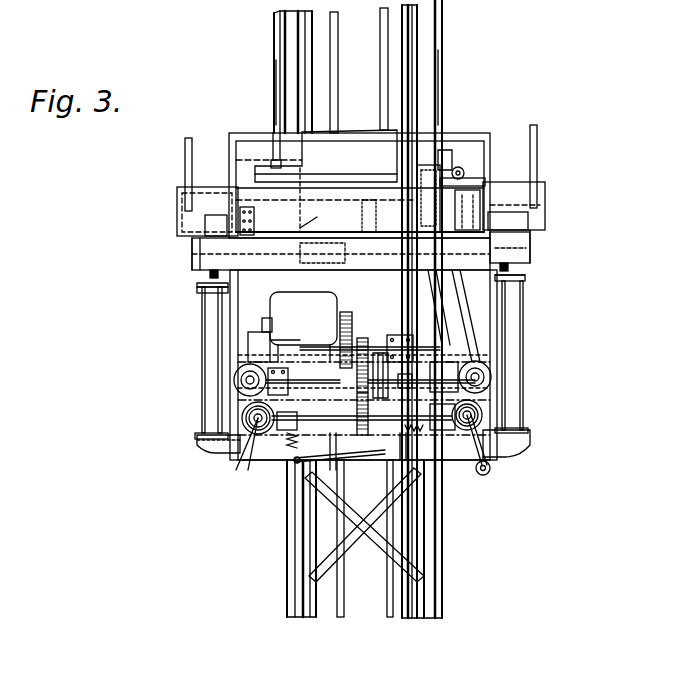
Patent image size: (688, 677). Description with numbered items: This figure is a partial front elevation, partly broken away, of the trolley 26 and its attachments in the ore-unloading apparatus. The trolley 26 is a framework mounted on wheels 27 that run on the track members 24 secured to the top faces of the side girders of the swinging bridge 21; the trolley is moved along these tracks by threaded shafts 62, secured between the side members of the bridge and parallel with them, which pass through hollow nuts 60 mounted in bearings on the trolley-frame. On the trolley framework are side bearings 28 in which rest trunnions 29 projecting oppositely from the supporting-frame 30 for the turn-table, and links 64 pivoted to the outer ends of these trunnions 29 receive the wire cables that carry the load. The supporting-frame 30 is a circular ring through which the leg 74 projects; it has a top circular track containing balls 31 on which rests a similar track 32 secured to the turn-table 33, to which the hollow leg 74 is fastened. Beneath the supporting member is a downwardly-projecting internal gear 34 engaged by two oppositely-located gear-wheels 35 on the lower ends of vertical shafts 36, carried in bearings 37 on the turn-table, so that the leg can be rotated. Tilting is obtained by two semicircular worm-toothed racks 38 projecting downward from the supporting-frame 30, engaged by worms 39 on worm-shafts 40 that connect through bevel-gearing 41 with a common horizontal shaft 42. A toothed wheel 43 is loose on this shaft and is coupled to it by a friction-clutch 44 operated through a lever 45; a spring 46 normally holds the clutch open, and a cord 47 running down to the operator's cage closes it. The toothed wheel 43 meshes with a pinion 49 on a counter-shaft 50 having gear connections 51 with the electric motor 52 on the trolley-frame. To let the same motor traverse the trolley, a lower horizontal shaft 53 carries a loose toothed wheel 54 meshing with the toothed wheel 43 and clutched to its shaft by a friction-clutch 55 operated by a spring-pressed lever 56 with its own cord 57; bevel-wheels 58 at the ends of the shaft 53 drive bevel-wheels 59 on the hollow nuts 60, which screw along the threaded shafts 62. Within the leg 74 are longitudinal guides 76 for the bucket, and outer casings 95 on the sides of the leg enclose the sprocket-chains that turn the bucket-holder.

The swinging bridge 21 is at (202, 329).
The track members 24 is at (207, 293).
The trolley 26 is at (341, 254).
The wheels 27 is at (208, 279).
The side bearings 28 is at (200, 206).
The trunnions 29 is at (190, 245).
The supporting-frame 30 is at (247, 195).
The balls 31 is at (485, 182).
The track 32 is at (464, 170).
The turn-table 33 is at (417, 203).
The internal gear 34 is at (530, 256).
The gear-wheels 35 is at (424, 286).
The vertical shafts 36 is at (273, 97).
The bearings 37 is at (271, 164).
The semicircular racks 38 is at (238, 357).
The worms 39 is at (234, 392).
The worm-shafts 40 is at (234, 382).
The bevel-gearing 41 is at (240, 405).
The horizontal shaft 42 is at (290, 381).
The toothed wheel 43 is at (348, 366).
The friction-clutch 44 is at (369, 414).
The lever 45 is at (355, 434).
The spring 46 is at (420, 440).
The cord 47 is at (492, 474).
The pinion 49 is at (370, 343).
The counter-shaft 50 is at (285, 353).
The gear connections 51 is at (353, 333).
The electric motor 52 is at (330, 300).
The horizontal shaft 53 is at (412, 381).
The toothed wheel 54 is at (362, 452).
The friction-clutch 55 is at (372, 410).
The spring-pressed lever 56 is at (336, 450).
The cord 57 is at (392, 487).
The bevel-wheels 58 is at (285, 432).
The bevel-wheels 59 is at (478, 414).
The hollow nuts 60 is at (250, 436).
The threaded shafts 62 is at (262, 435).
The links 64 is at (192, 150).
The leg 74 is at (443, 12).
The longitudinal guides 76 is at (380, 50).
The outer casings 95 is at (282, 62).